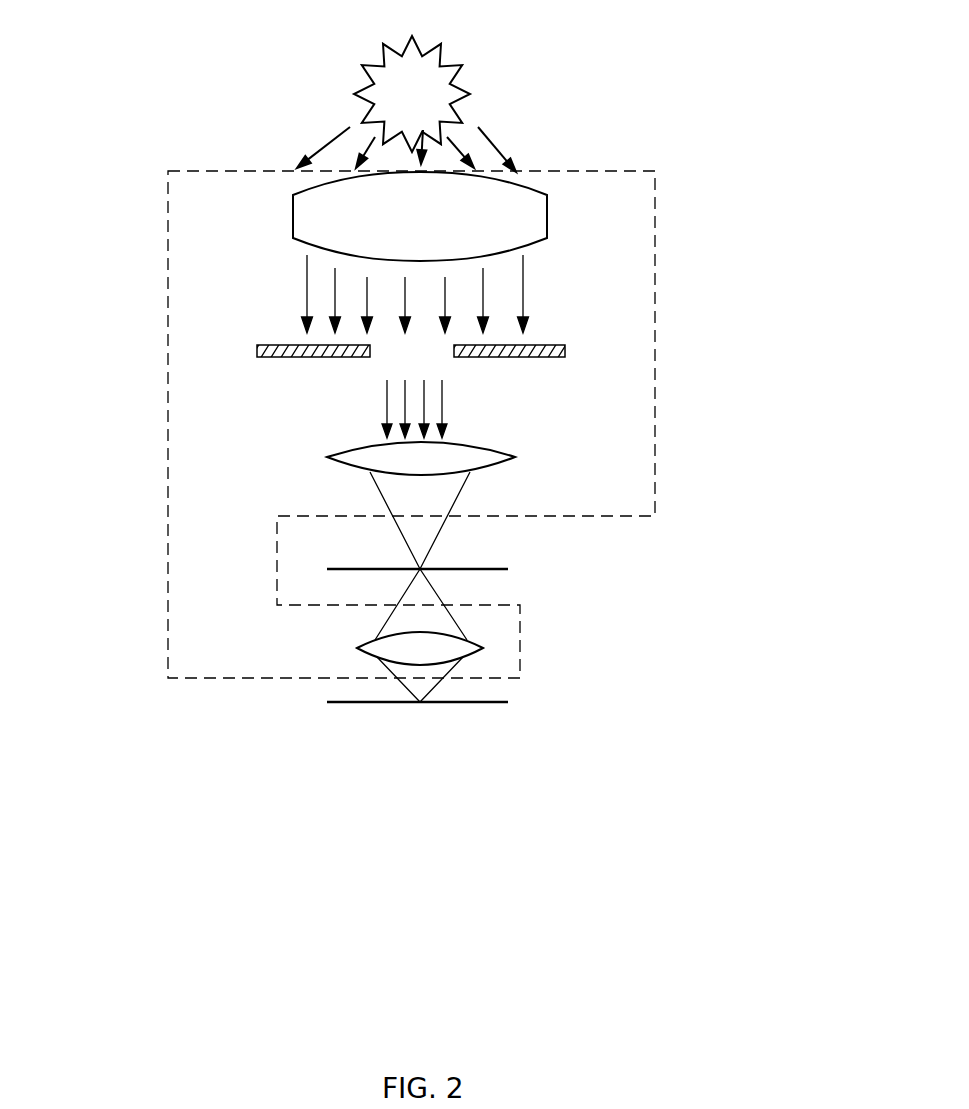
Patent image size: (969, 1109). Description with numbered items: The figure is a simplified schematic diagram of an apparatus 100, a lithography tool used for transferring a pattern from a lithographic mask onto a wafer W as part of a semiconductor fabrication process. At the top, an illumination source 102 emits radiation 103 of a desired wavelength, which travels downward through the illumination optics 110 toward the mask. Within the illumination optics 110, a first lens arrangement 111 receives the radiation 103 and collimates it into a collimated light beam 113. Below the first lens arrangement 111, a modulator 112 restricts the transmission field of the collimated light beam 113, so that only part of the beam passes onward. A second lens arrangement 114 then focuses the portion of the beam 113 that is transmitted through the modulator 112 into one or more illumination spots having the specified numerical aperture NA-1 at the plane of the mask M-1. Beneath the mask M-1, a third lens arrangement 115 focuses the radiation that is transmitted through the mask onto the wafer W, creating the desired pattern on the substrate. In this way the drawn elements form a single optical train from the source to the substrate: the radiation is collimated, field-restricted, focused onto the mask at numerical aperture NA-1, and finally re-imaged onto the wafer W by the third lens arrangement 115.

The apparatus 100 is at (588, 78).
The illumination source 102 is at (363, 72).
The radiation 103 is at (313, 137).
The illumination optics 110 is at (168, 210).
The first lens arrangement 111 is at (293, 228).
The modulator 112 is at (257, 352).
The collimated light beam 113 is at (307, 297).
The second lens arrangement 114 is at (327, 457).
The third lens arrangement 115 is at (357, 648).
The numerical aperture NA-1 is at (457, 502).
The mask M-1 is at (483, 569).
The wafer W is at (360, 700).